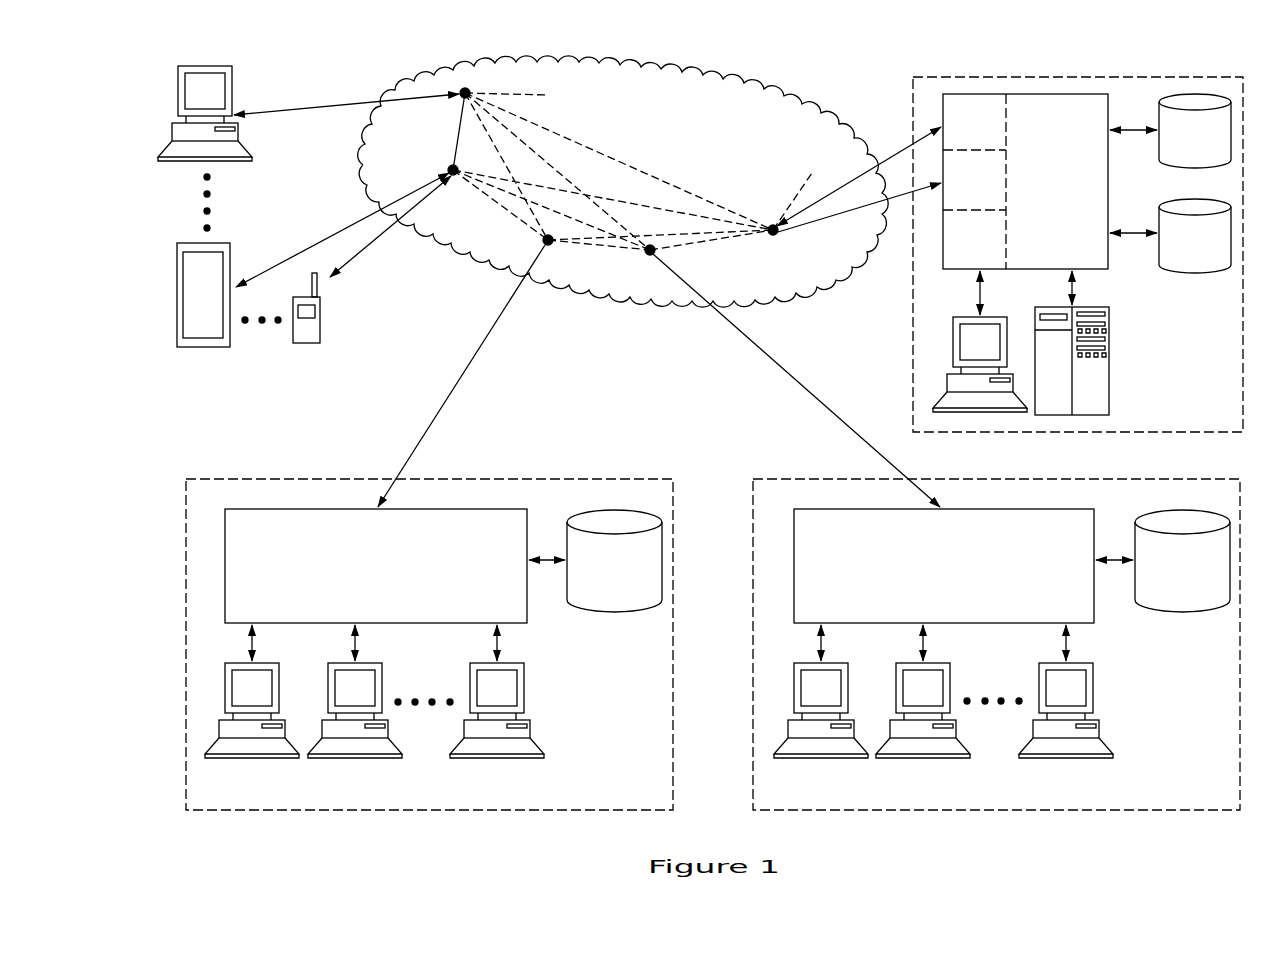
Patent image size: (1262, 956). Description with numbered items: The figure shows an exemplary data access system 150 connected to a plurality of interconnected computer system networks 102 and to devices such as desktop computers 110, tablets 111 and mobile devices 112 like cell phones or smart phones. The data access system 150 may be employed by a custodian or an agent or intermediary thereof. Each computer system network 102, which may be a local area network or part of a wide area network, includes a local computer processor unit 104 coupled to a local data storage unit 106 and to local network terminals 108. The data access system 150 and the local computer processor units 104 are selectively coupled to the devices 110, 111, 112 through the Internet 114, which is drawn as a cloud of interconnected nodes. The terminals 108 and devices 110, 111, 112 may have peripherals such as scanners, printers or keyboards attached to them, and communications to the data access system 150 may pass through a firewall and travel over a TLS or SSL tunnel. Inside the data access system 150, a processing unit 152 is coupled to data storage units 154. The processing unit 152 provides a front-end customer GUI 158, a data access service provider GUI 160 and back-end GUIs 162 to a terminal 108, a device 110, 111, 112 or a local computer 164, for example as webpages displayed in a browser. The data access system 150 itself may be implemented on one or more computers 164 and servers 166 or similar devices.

The computer system network 102 is at (250, 478).
The local computer processor unit 104 is at (392, 595).
The local data storage unit 106 is at (630, 571).
The local network terminal 108 is at (225, 688).
The desktop computer 110 is at (232, 77).
The tablet 111 is at (232, 255).
The mobile device 112 is at (320, 300).
The Internet 114 is at (705, 138).
The data access system 150 is at (1115, 75).
The processing unit 152 is at (1064, 190).
The data storage unit 154 is at (1211, 143).
The customer GUI 158 is at (986, 130).
The data access service provider GUI 160 is at (986, 188).
The back-end GUI 162 is at (986, 248).
The local computer 164 is at (945, 383).
The server 166 is at (1109, 368).